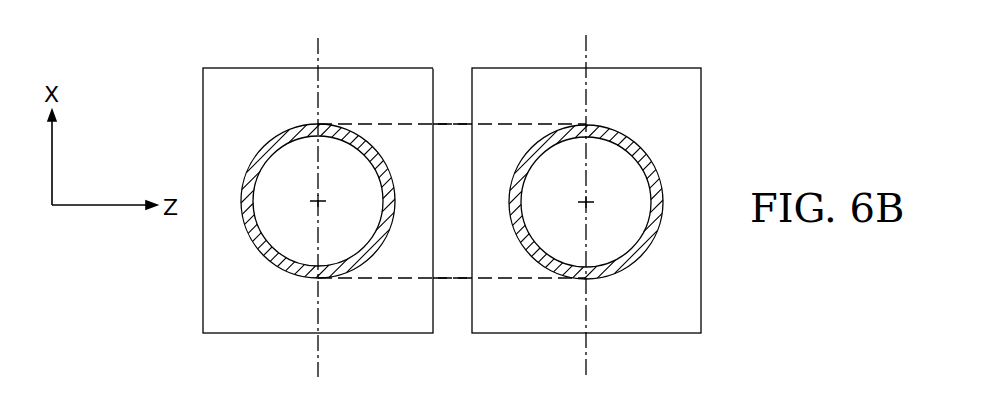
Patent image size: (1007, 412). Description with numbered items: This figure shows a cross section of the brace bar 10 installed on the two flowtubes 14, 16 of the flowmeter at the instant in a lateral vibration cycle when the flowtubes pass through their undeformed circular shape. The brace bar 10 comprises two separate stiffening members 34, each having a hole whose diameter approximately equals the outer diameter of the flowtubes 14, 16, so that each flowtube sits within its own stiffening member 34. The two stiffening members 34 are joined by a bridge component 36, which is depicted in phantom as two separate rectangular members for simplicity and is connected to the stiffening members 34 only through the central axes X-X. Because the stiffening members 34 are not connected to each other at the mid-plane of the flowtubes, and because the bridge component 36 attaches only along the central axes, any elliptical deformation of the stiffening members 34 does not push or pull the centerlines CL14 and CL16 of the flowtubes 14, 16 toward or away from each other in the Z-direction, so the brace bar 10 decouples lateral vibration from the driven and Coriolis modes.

The brace bar 10 is at (760, 80).
The flowtube 14 is at (278, 140).
The flowtube 16 is at (617, 141).
The stiffening member 34 is at (239, 333).
The bridge component 36 is at (452, 78).
The centerline of flowtube 14 CL14 is at (319, 204).
The centerline of flowtube 16 CL16 is at (587, 205).